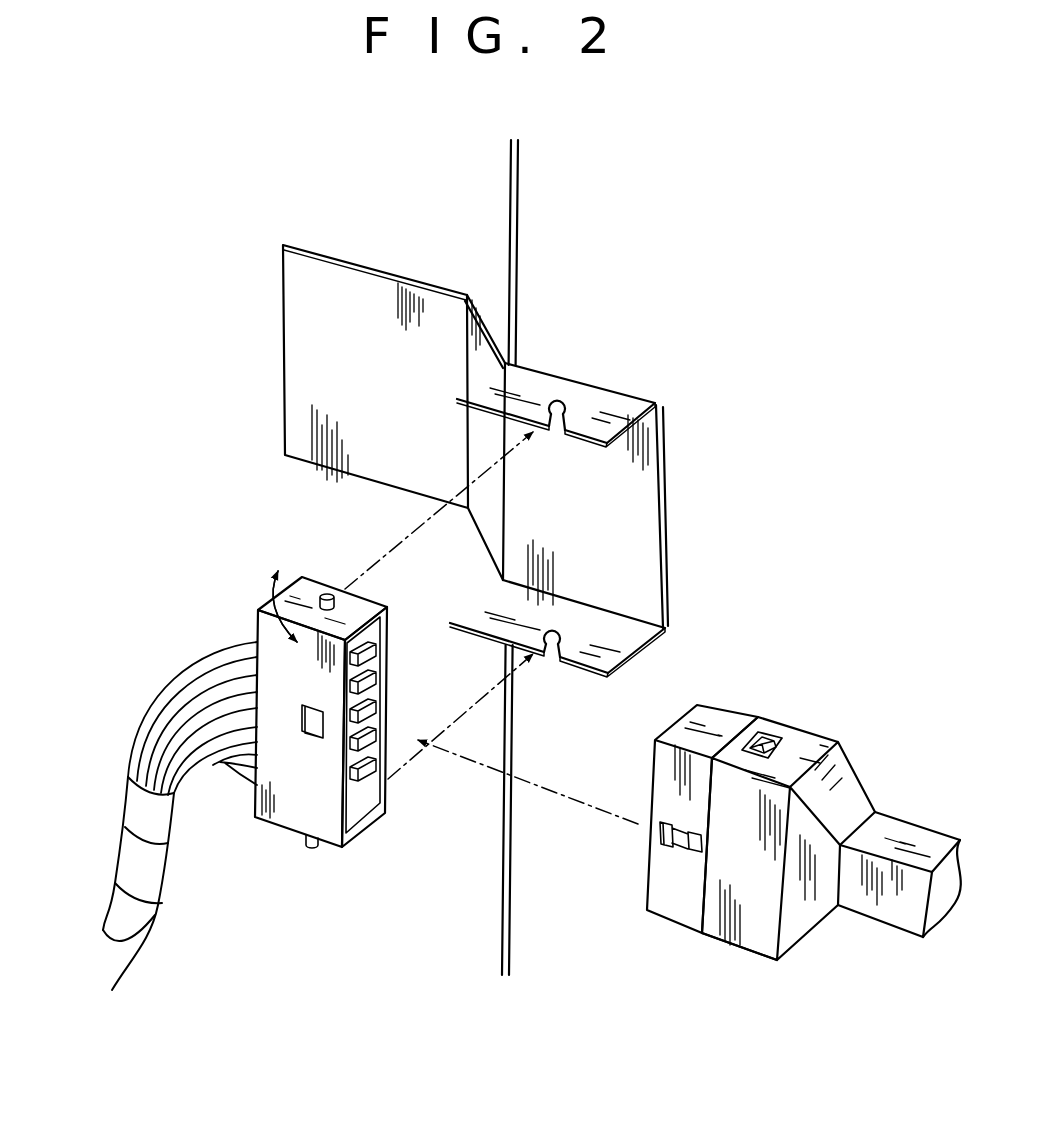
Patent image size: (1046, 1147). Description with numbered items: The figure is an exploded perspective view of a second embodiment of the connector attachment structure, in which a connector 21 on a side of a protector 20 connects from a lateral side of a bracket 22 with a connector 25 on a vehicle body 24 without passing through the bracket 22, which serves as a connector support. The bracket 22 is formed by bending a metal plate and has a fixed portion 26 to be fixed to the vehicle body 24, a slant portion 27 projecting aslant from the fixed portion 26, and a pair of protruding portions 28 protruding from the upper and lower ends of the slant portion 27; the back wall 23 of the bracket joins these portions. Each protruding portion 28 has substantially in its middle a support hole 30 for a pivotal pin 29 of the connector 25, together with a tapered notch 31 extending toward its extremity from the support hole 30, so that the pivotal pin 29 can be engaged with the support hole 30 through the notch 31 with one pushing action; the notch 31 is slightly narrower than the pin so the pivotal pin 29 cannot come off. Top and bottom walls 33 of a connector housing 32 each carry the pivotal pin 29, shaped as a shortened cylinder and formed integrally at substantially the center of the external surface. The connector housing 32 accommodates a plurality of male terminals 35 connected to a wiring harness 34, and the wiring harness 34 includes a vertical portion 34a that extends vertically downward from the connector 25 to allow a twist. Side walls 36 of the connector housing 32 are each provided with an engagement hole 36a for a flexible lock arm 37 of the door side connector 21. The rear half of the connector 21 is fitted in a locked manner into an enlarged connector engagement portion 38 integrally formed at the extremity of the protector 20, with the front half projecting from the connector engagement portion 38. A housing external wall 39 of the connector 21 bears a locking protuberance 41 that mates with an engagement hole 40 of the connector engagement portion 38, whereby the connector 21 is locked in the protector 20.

The protector 20 is at (870, 920).
The connector 21 is at (730, 820).
The bracket 22 is at (514, 484).
The back wall of bracket 23 is at (641, 560).
The vehicle body 24 is at (513, 848).
The connector 25 is at (316, 716).
The fixed portion 26 is at (432, 302).
The slant portion 27 is at (490, 334).
The protruding portions 28 is at (620, 407).
The pivotal pin 29 is at (328, 594).
The support hole 30 is at (562, 397).
The tapered notch 31 is at (546, 423).
The connector housing 32 is at (253, 810).
The top and bottom walls 33 is at (362, 603).
The wiring harness 34 is at (142, 713).
The vertical portion 34a is at (143, 923).
The male terminals 35 is at (372, 778).
The side walls 36 is at (283, 817).
The engagement hole 36a is at (313, 742).
The flexible lock arm 37 is at (690, 855).
The connector engagement portion 38 is at (764, 956).
The housing external wall 39 is at (716, 720).
The engagement hole 40 is at (776, 738).
The locking protuberance 41 is at (764, 742).